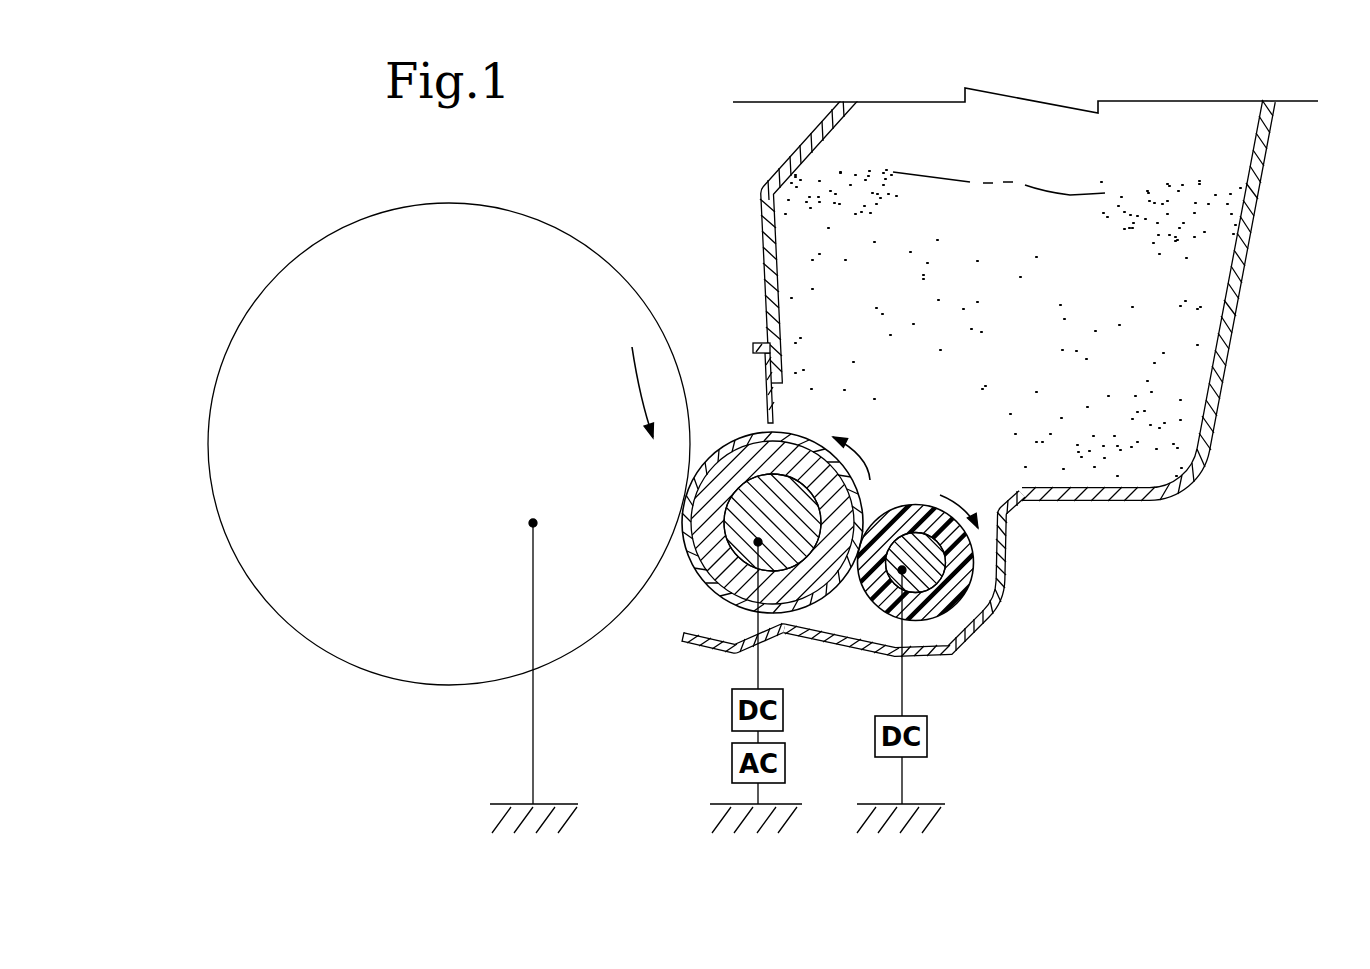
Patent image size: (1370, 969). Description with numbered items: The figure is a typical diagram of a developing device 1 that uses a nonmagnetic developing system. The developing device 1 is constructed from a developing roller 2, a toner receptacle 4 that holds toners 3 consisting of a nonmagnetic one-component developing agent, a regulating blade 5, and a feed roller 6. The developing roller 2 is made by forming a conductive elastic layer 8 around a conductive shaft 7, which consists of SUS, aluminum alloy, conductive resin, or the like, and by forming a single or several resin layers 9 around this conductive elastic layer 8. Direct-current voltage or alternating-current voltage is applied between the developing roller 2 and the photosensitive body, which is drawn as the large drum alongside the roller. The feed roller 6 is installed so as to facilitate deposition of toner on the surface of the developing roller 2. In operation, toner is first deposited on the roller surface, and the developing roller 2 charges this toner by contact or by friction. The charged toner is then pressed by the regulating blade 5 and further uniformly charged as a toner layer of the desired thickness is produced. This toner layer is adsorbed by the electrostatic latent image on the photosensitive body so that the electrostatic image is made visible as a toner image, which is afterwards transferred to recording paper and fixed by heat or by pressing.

The developing device 1 is at (1272, 367).
The developing roller 2 is at (735, 432).
The toner 3 is at (1262, 262).
The toner receptacle 4 is at (1183, 488).
The regulating blade 5 is at (763, 345).
The feed roller 6 is at (960, 605).
The conductive shaft 7 is at (730, 518).
The conductive elastic layer 8 is at (703, 565).
The resin layer 9 is at (709, 627).